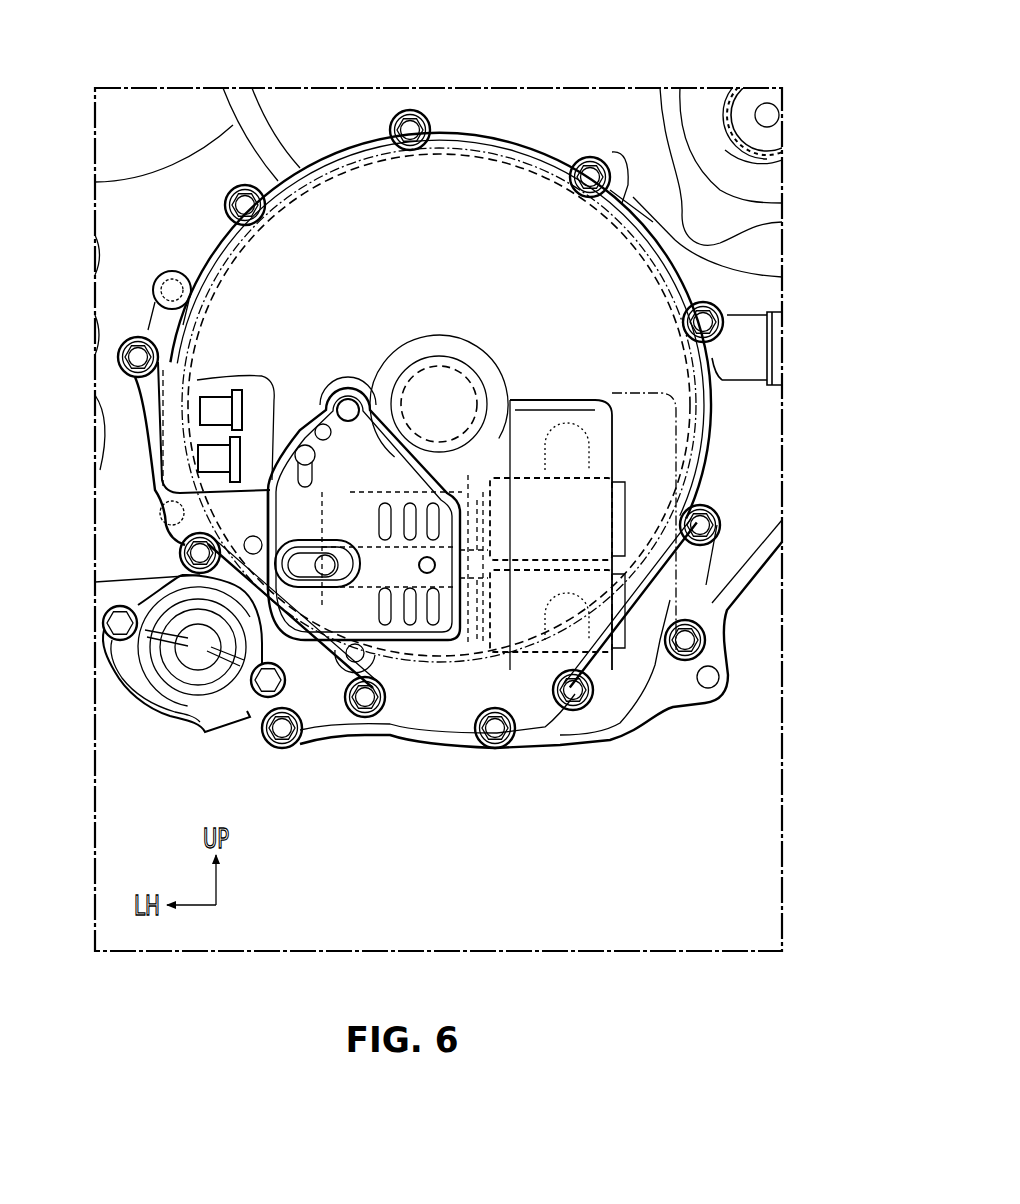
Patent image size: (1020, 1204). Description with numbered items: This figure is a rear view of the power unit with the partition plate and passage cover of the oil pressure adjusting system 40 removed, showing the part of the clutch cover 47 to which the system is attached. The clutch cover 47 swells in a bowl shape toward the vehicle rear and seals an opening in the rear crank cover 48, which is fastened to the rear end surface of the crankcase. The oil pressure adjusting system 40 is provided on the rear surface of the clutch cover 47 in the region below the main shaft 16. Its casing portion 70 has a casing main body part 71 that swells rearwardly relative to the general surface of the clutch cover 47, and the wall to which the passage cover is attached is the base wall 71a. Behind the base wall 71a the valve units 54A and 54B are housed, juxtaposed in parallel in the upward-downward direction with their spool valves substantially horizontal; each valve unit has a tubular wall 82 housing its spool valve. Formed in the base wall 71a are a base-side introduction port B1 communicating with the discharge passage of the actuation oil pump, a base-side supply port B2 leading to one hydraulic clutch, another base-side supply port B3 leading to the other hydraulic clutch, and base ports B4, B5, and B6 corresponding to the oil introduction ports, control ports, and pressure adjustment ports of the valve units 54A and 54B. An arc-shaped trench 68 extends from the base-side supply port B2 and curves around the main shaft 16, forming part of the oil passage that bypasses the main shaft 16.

The main shaft 16 is at (455, 370).
The clutch cover 47 is at (522, 145).
The tubular wall 82 is at (372, 392).
The base-side supply port B2 is at (348, 398).
The base port B6 is at (388, 503).
The base port B4 is at (411, 503).
The base port B5 is at (437, 503).
The oil pressure adjusting system 40 is at (553, 396).
The valve unit 54A is at (600, 502).
The valve unit 54B is at (590, 587).
The base wall 71a is at (300, 483).
The base-side introduction port B1 is at (330, 565).
The casing main body part 71 is at (430, 640).
The casing portion 70 is at (376, 746).
The rear crank cover 48 is at (561, 748).
The base-side supply port B3 is at (300, 446).
The arc-shaped trench 68 is at (320, 425).